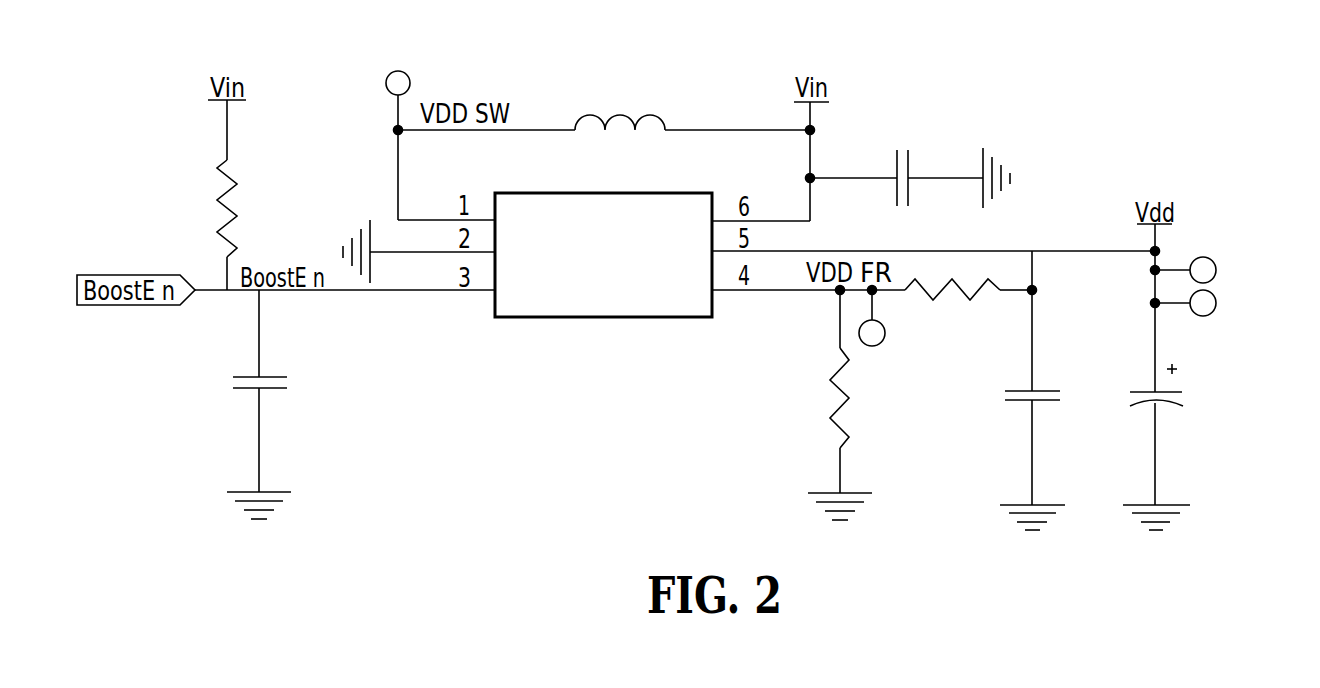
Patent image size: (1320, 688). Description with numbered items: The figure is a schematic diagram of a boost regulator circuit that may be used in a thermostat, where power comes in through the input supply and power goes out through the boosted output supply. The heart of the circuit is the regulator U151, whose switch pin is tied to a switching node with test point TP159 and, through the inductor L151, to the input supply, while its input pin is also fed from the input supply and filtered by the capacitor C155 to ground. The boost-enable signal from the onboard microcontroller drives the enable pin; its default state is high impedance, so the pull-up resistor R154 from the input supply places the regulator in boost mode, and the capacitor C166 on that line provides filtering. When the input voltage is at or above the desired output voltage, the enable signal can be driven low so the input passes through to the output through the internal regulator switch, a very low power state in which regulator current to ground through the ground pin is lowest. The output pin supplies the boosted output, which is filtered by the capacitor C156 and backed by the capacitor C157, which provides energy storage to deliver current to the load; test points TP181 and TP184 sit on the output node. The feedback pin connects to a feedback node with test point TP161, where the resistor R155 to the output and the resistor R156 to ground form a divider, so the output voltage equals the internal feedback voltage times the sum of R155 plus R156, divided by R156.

The pull-up resistor R154 is at (258, 208).
The capacitor C166 is at (291, 396).
The test point VDD SW TP159 is at (398, 84).
The MCP1640C boost converter U151 is at (601, 260).
The 4.7uH inductor L151 is at (620, 120).
The capacitor C155 is at (937, 159).
The resistor R155 is at (952, 323).
The test point VDD FR TP161 is at (890, 339).
The resistor R156 is at (808, 398).
The capacitor C156 is at (1065, 415).
The capacitor C157 is at (1189, 415).
The test point Vdd TP181 is at (1225, 274).
The test point Vdd TP184 is at (1225, 306).